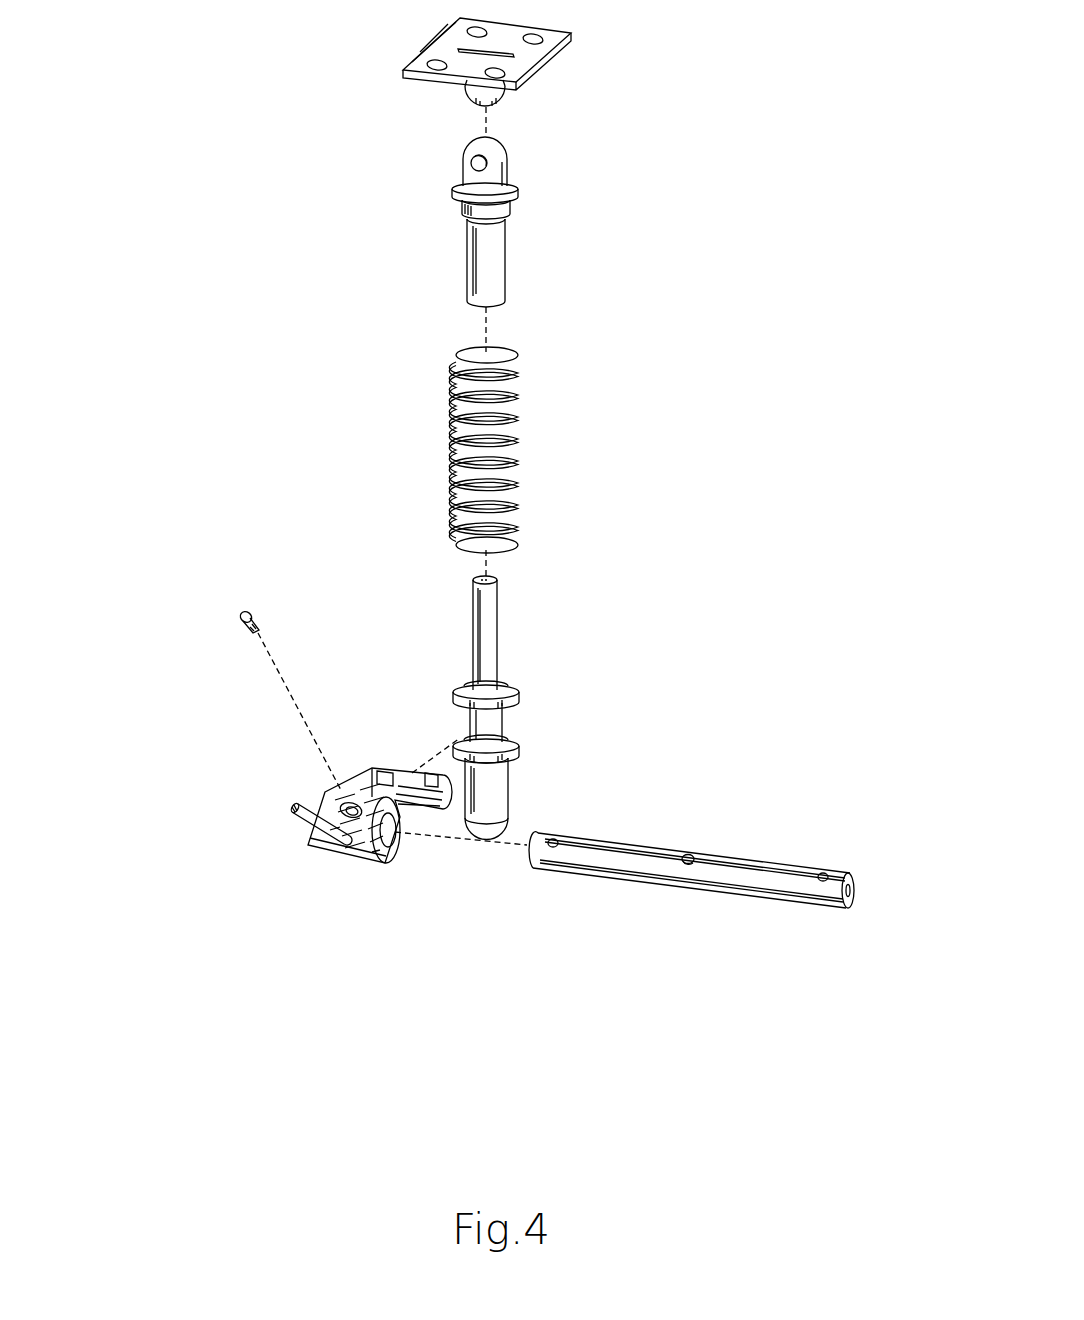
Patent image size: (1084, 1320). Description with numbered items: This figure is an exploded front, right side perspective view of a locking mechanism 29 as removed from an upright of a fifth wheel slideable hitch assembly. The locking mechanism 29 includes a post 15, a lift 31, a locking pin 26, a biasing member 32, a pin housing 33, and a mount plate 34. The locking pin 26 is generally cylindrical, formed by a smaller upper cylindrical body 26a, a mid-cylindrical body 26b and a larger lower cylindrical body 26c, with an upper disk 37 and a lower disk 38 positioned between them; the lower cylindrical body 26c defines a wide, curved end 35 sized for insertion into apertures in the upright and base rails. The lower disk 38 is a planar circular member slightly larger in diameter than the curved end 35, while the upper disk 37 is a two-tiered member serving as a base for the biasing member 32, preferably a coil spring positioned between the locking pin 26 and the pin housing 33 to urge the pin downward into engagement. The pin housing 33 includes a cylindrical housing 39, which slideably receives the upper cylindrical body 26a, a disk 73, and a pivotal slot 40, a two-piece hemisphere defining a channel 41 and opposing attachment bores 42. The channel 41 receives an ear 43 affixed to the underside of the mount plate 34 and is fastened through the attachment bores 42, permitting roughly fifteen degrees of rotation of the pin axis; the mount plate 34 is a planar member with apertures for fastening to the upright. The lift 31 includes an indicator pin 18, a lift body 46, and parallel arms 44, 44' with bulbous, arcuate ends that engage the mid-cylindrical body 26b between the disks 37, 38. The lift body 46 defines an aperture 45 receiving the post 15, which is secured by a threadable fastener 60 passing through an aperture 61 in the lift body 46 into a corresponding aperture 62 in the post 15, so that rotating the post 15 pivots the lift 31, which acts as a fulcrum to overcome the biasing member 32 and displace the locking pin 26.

The locking mechanism 29 is at (169, 117).
The mount plate 34 is at (570, 34).
The ear 43 is at (466, 93).
The channel 41 is at (477, 140).
The pivotal slot 40 is at (482, 160).
The attachment bores 42 is at (470, 163).
The disk 73 is at (455, 193).
The pin housing 33 is at (462, 218).
The cylindrical housing 39 is at (470, 281).
The biasing member 32 is at (518, 401).
The locking pin 26 is at (533, 703).
The upper cylindrical body 26a is at (493, 607).
The upper disk 37 is at (520, 690).
The mid-cylindrical body 26b is at (496, 722).
The lower disk 38 is at (520, 746).
The lower cylindrical body 26c is at (520, 799).
The curved end 35 is at (502, 827).
The threadable fastener 60 is at (240, 624).
The lift 31 is at (361, 804).
The lift body 46 is at (367, 775).
The arm 44' is at (382, 735).
The arm 44 is at (424, 748).
The aperture 61 is at (343, 808).
The aperture 45 is at (394, 846).
The indicator pin 18 is at (292, 808).
The post 15 is at (691, 842).
The aperture 62 is at (690, 857).